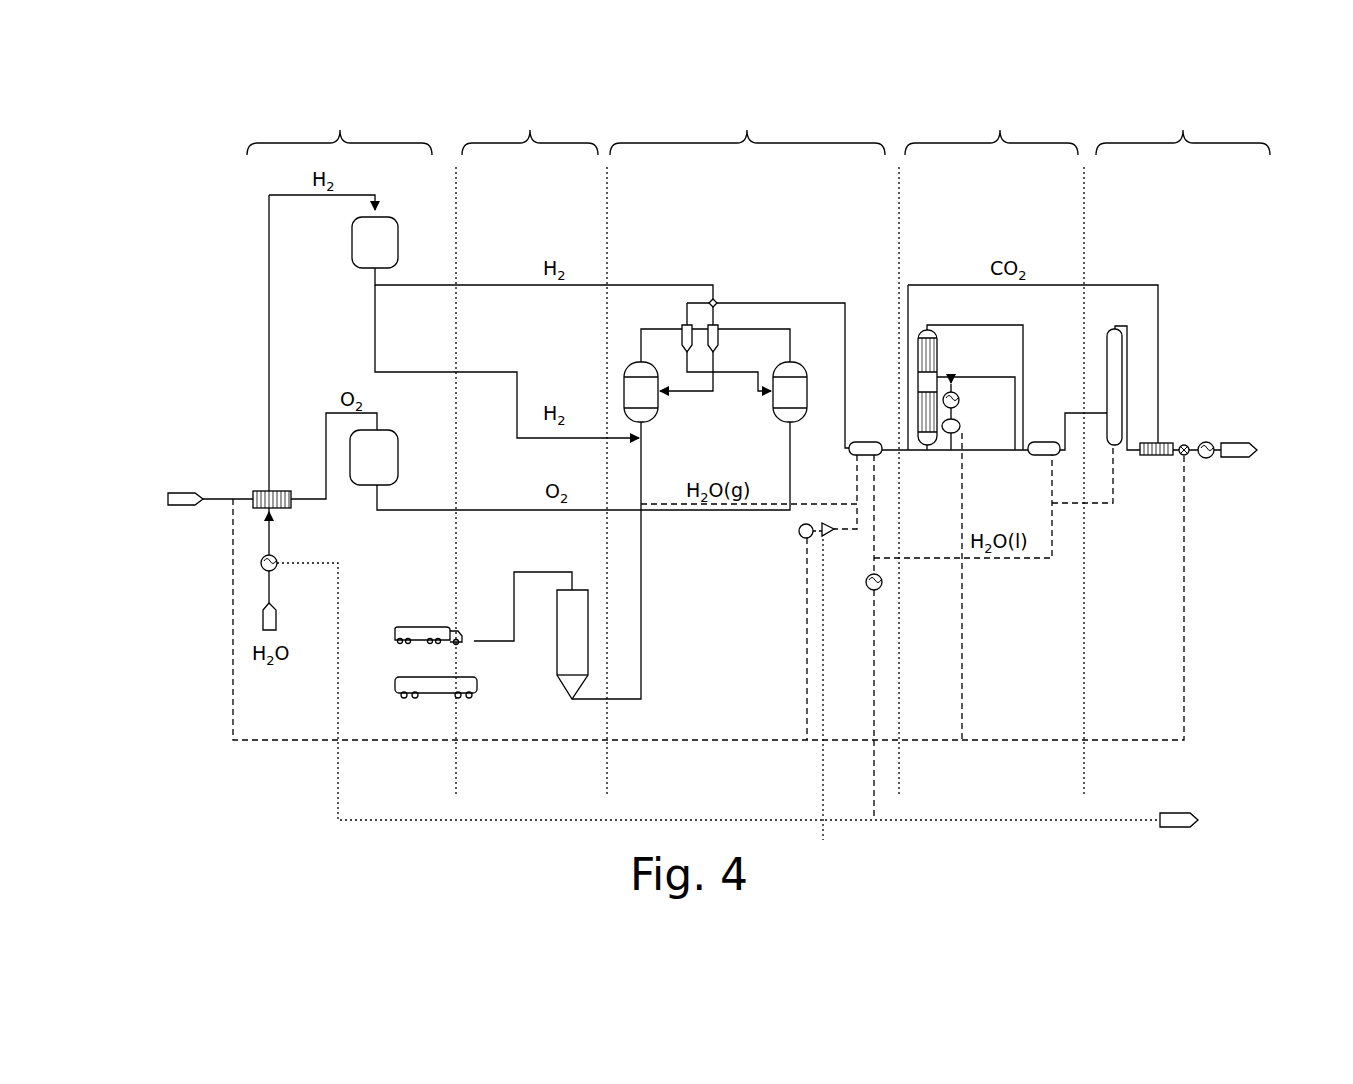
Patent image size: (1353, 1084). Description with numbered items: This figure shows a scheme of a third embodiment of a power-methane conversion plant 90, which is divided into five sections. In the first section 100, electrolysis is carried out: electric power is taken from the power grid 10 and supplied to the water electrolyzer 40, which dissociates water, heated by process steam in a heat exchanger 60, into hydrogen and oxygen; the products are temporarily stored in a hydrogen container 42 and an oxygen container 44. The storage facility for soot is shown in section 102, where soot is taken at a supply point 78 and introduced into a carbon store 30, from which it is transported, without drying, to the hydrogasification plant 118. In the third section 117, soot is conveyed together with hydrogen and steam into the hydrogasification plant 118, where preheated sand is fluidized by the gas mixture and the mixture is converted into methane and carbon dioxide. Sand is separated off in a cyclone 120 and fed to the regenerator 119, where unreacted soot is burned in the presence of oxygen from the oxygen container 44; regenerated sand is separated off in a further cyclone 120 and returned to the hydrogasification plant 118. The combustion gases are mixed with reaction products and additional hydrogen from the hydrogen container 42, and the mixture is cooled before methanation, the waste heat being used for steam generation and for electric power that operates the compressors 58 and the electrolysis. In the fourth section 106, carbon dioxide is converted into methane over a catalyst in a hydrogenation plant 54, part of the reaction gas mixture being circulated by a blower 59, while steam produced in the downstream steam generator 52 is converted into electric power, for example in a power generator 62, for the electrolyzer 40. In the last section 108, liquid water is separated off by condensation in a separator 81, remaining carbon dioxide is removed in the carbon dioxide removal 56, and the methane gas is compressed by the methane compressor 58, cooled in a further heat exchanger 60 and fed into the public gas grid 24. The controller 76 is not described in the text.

The power grid 10 is at (185, 493).
The public gas grid 24 is at (1243, 443).
The carbon store 30 is at (578, 590).
The water electrolyzer 40 is at (273, 491).
The hydrogen container 42 is at (398, 242).
The oxygen container 44 is at (398, 460).
The steam generator 52 is at (866, 442).
The hydrogenation plant 54 is at (938, 358).
The carbon dioxide removal 56 is at (1155, 457).
The methane compressor 58 is at (1188, 457).
The blower 59 is at (961, 428).
The heat exchanger 60 is at (278, 561).
The power generator 62 is at (829, 540).
The controller 76 is at (1176, 813).
The supply point 78 is at (417, 671).
The separator 81 is at (1112, 330).
The power-methane conversion plant 90 is at (202, 181).
The first section 100 is at (339, 128).
The section 102 is at (530, 128).
The fourth section 106 is at (991, 128).
The last section 108 is at (1183, 128).
The third section 117 is at (747, 128).
The hydrogasification plant 118 is at (658, 398).
The regenerator 119 is at (806, 400).
The cyclone 120 is at (682, 328).